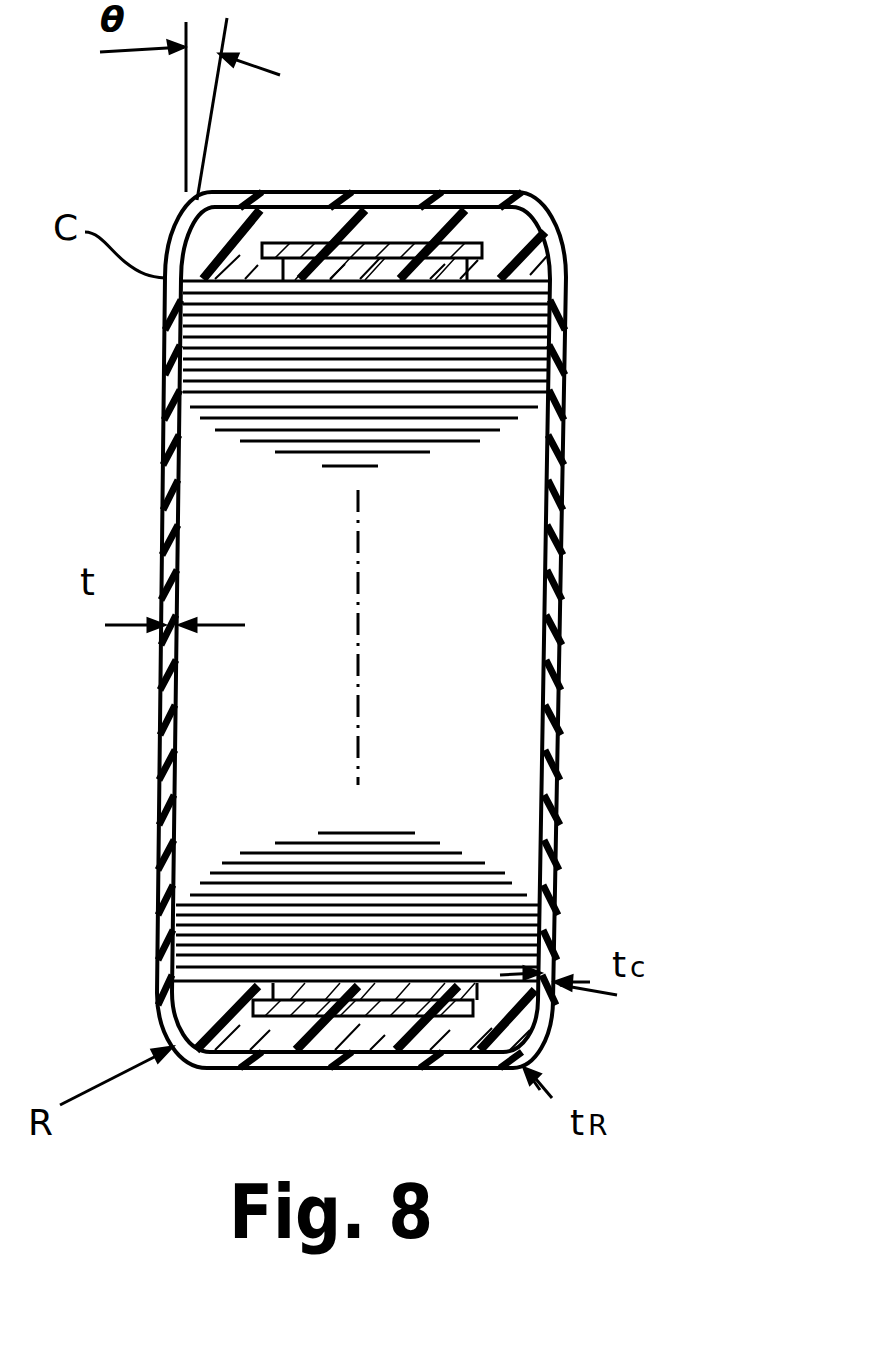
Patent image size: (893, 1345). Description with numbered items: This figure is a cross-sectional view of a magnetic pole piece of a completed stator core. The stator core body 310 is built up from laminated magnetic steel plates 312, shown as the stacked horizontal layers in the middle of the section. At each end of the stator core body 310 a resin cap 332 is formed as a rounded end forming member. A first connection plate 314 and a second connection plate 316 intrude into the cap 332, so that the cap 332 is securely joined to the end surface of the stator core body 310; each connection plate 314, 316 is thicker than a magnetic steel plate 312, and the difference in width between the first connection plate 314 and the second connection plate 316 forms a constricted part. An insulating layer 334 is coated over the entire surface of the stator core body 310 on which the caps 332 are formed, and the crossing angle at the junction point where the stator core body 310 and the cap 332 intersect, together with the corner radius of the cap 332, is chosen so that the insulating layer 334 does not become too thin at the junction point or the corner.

The stator core body 310 is at (545, 426).
The magnetic steel plate 312 is at (503, 310).
The first connection plate 314 is at (412, 268).
The second connection plate 316 is at (378, 240).
The resin cap 332 is at (506, 236).
The insulating layer 334 is at (553, 630).